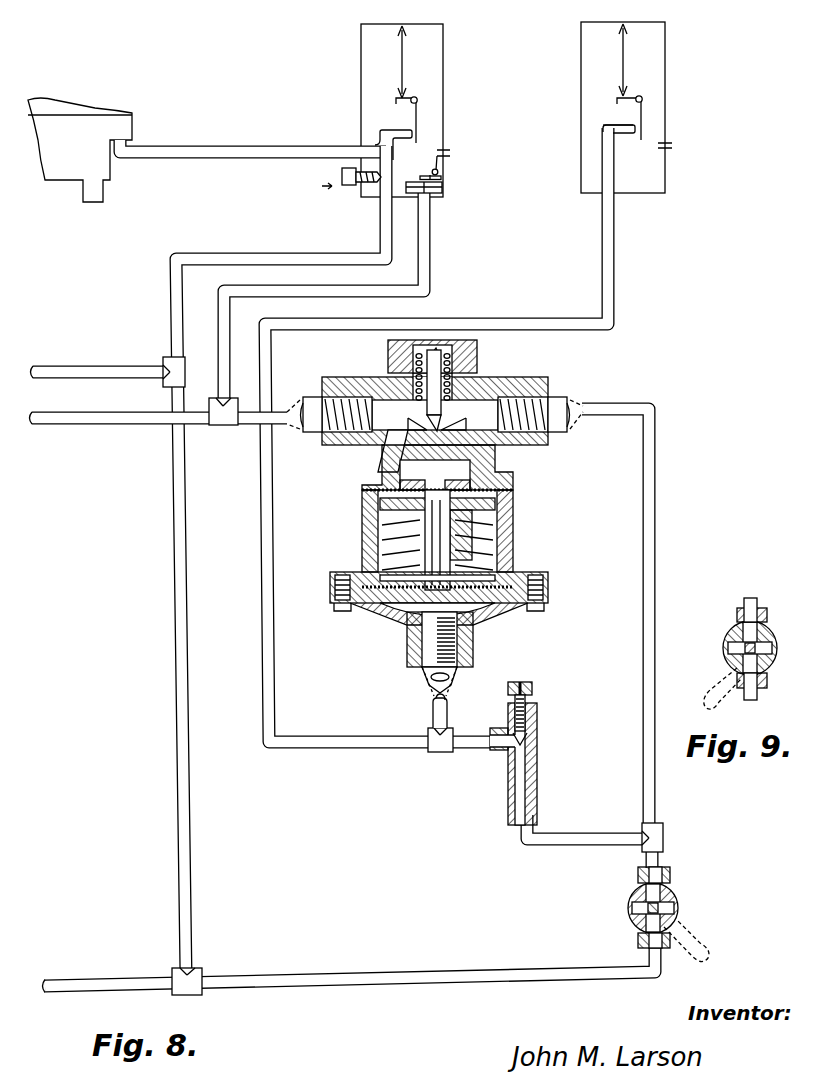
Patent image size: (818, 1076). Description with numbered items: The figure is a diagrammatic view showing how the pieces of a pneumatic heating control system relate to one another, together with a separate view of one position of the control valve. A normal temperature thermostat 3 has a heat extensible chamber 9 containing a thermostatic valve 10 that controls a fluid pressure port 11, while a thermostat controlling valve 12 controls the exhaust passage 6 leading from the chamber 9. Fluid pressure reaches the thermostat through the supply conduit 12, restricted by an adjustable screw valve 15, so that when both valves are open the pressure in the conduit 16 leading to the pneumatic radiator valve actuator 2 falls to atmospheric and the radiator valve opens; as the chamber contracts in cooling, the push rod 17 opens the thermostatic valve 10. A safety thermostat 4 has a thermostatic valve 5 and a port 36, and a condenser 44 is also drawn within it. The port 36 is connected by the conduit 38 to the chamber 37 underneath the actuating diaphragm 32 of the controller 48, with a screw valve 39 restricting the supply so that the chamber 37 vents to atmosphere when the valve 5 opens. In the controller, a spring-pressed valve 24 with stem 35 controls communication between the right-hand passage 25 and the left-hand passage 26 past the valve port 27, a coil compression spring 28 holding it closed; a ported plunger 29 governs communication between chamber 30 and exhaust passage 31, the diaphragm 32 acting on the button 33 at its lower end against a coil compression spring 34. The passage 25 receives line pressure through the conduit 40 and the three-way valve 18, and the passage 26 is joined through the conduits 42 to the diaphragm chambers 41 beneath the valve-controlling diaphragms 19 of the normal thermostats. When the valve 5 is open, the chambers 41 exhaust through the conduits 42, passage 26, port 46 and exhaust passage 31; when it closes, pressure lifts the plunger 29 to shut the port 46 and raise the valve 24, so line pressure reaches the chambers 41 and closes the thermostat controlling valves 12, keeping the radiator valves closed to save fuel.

In FIG. 8, the fluid pressure actuator 2 is at (105, 170).
In FIG. 8, the normal temperature thermostat 3 is at (445, 85).
In FIG. 8, the safety thermostat 4 is at (652, 184).
In FIG. 8, the thermostatic valve 5 is at (645, 120).
In FIG. 8, the exhaust passage 6 is at (448, 150).
In FIG. 8, the heat extensible chamber 9 is at (361, 68).
In FIG. 8, the thermostatic valve 10 is at (416, 120).
In FIG. 8, the fluid pressure port 11 is at (405, 125).
In FIG. 8, the thermostat controlling valve 12 is at (232, 264).
In FIG. 8, the adjustable screw valve 15 is at (348, 190).
In FIG. 8, the conduit 16 is at (262, 152).
In FIG. 8, the push rod 17 is at (402, 62).
In FIG. 8, the three-way valve 18 is at (666, 890).
In FIG. 9, the three-way valve 18 is at (725, 660).
In FIG. 8, the valve-controlling diaphragm 19 is at (433, 196).
In FIG. 8, the spring-pressed valve 24 is at (447, 421).
In FIG. 8, the right-hand passage 25 is at (494, 385).
In FIG. 8, the left-hand passage 26 is at (394, 446).
In FIG. 8, the valve port 27 is at (480, 456).
In FIG. 8, the coil compression spring 28 is at (412, 372).
In FIG. 8, the ported plunger 29 is at (472, 535).
In FIG. 8, the chamber 30 is at (462, 479).
In FIG. 8, the exhaust passage 31 is at (500, 505).
In FIG. 8, the actuating diaphragm 32 is at (466, 606).
In FIG. 8, the button 33 is at (400, 600).
In FIG. 8, the coil compression spring 34 is at (452, 552).
In FIG. 8, the valve stem 35 is at (400, 494).
In FIG. 8, the port 36 is at (625, 125).
In FIG. 8, the chamber 37 is at (412, 616).
In FIG. 8, the conduit 38 is at (268, 686).
In FIG. 8, the screw valve 39 is at (533, 689).
In FIG. 8, the conduit 40 is at (651, 482).
In FIG. 8, the diaphragm chamber 41 is at (420, 195).
In FIG. 8, the conduit 42 is at (220, 318).
In FIG. 8, the condenser 44 is at (672, 148).
In FIG. 8, the port 46 is at (412, 500).
In FIG. 8, the controller 48 is at (516, 562).